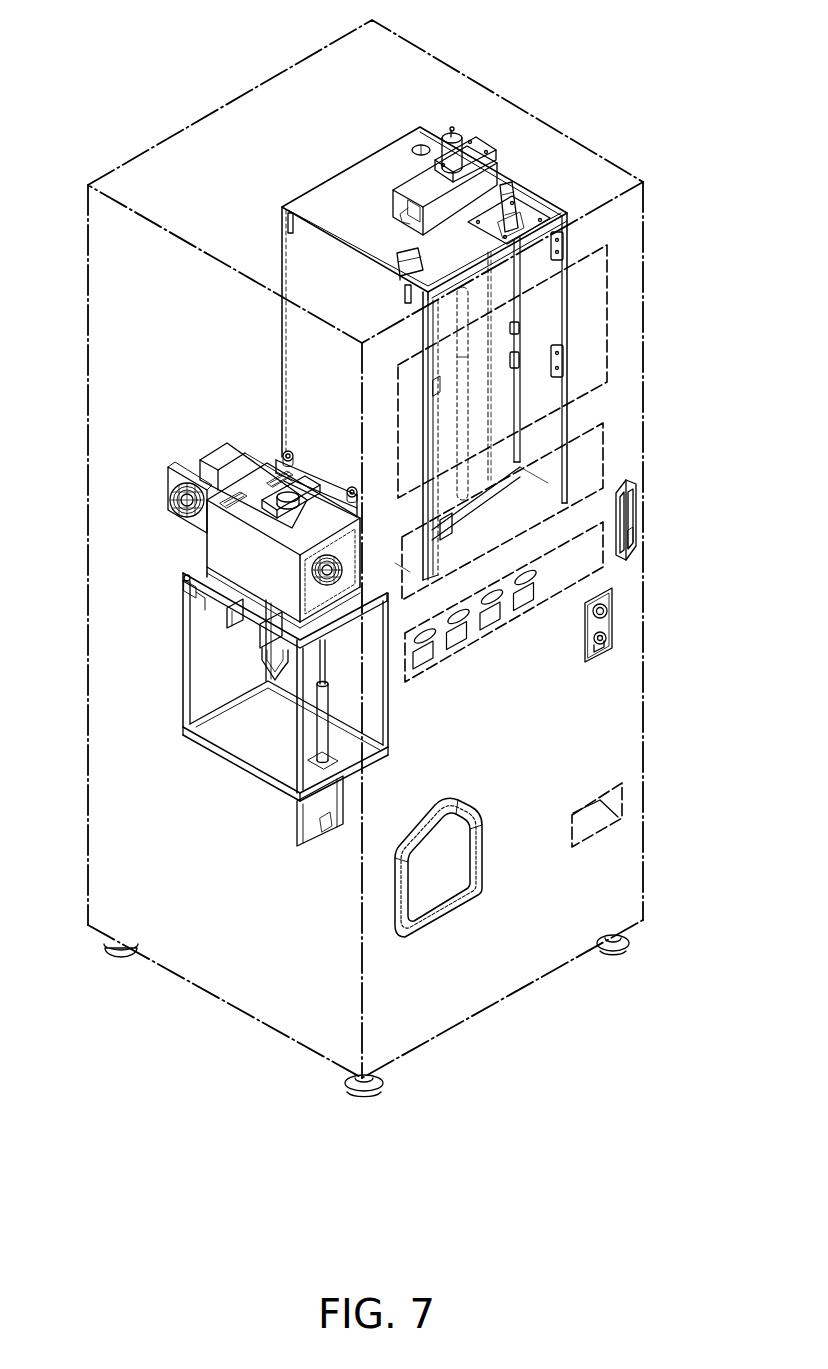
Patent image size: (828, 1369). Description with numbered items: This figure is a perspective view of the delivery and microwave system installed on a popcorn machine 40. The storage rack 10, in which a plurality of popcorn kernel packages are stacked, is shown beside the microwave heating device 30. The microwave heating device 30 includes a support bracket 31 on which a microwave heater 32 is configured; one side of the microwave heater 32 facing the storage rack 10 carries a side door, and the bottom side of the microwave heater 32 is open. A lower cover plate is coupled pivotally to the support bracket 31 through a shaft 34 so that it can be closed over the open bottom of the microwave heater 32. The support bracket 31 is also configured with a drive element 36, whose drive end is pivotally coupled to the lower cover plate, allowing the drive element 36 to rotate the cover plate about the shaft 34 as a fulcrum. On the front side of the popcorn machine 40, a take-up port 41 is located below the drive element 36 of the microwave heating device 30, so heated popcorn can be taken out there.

The popcorn machine 40 is at (257, 86).
The storage rack 10 is at (543, 438).
The microwave heating device 30 is at (247, 607).
The support bracket 31 is at (186, 650).
The microwave heater 32 is at (225, 565).
The shaft 34 is at (184, 580).
The drive element 36 is at (322, 725).
The take-up port 41 is at (455, 882).